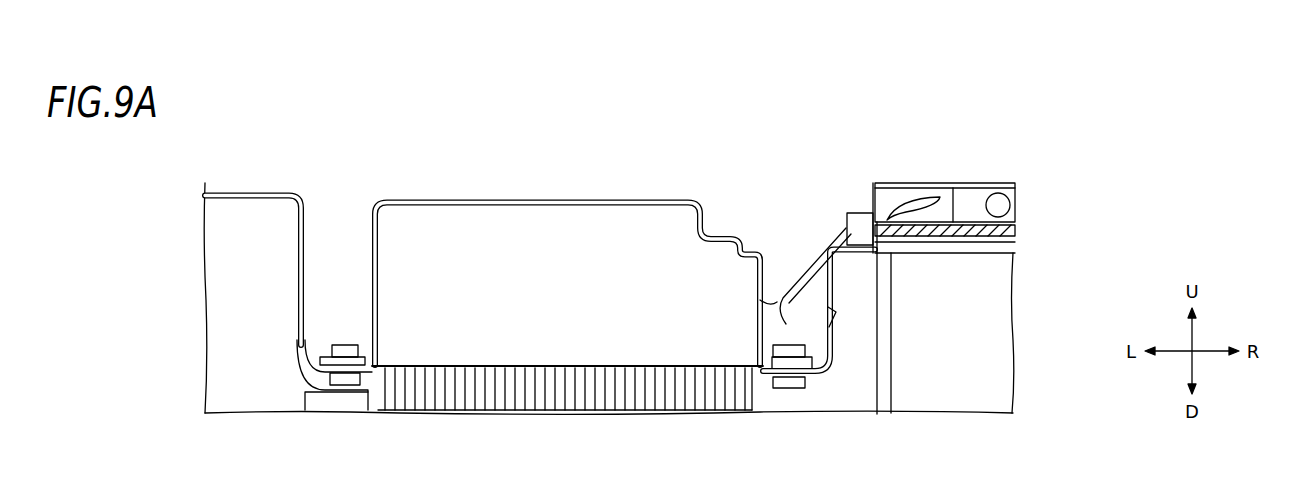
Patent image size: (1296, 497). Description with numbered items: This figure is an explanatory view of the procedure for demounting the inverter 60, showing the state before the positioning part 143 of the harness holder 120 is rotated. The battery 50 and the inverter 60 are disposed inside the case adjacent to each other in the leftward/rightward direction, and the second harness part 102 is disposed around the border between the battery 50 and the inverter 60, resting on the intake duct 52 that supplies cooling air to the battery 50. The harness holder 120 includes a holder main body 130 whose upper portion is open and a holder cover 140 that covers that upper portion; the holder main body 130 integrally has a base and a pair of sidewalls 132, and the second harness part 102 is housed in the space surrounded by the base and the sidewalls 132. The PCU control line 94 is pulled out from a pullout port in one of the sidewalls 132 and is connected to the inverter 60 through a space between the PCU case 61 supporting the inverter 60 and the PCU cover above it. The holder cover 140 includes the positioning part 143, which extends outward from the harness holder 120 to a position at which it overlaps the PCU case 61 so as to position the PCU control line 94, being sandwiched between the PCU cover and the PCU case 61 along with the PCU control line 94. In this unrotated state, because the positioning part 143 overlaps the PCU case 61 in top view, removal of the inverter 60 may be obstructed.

The battery 50 is at (980, 355).
The intake duct 52 is at (1014, 247).
The inverter 60 is at (614, 200).
The PCU case 61 is at (843, 257).
The PCU control line 94 is at (800, 268).
The second harness part 102 is at (1012, 203).
The harness holder 120 is at (988, 181).
The holder main body 130 is at (970, 250).
The sidewalls 132 is at (869, 190).
The holder cover 140 is at (940, 183).
The positioning part 143 is at (840, 207).